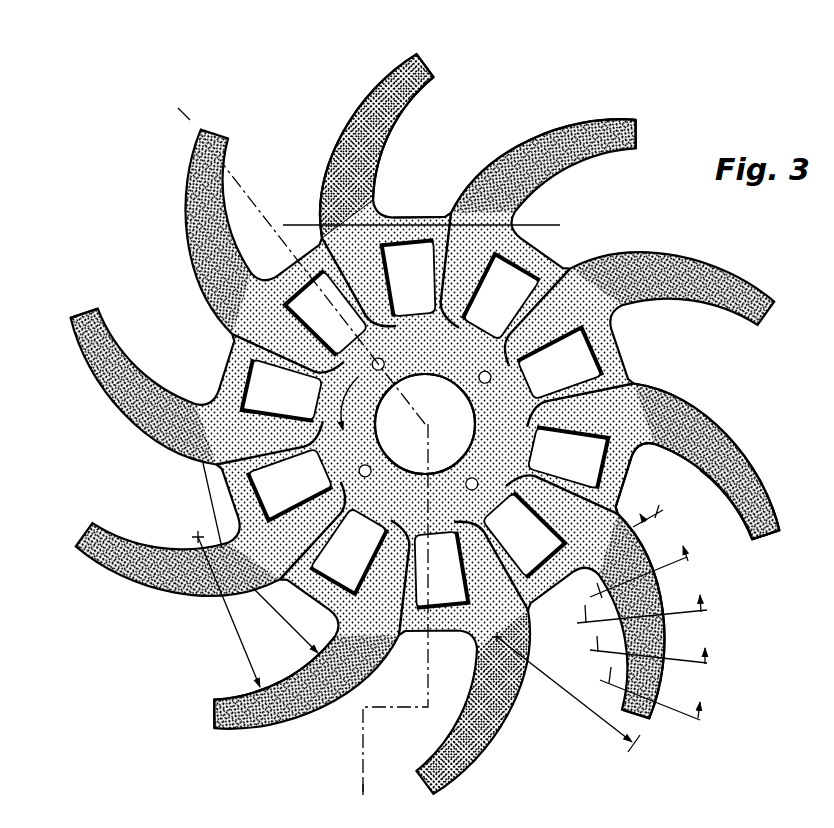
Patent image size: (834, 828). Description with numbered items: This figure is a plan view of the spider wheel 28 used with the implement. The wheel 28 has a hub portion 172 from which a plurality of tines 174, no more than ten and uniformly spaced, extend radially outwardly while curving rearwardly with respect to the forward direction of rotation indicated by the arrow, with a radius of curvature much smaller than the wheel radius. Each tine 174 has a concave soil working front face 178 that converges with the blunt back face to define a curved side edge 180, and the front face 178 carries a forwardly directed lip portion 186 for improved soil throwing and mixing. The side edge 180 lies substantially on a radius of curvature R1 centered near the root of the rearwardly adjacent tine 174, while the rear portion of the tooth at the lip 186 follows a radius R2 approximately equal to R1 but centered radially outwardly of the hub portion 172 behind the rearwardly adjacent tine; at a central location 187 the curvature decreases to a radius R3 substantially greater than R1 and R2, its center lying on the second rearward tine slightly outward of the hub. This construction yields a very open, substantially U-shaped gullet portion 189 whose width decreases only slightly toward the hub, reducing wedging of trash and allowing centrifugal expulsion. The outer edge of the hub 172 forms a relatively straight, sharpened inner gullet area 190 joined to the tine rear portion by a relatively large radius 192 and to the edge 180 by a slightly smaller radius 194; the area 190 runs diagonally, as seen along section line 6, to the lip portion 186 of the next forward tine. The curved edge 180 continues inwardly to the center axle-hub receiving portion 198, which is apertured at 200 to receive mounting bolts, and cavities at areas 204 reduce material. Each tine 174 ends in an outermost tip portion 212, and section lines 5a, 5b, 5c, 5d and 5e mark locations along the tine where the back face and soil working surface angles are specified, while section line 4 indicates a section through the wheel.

The wheel 28 is at (395, 63).
The tine 174 is at (432, 76).
The soil working front face 178 is at (332, 137).
The lip portion 186 is at (391, 135).
The hub portion 172 is at (425, 214).
The curved side edge 180 is at (527, 128).
The section line 6- 6 is at (293, 234).
The section line 4- 4 is at (209, 96).
The center axle-hub receiving portion 198 is at (434, 358).
The apertures 200 is at (485, 371).
The cavities 204 is at (478, 400).
The relatively large radius 192 is at (667, 447).
The inner gullet area 190 is at (652, 480).
The slightly smaller radius 194 is at (630, 513).
The section 5a is at (611, 516).
The section 5b is at (659, 563).
The section 5c is at (646, 616).
The section 5d is at (652, 656).
The section 5e is at (651, 699).
The outermost tip portion 212 is at (780, 535).
The gullet portion 189 is at (727, 543).
The central location 187 is at (282, 715).
The radius of curvature R1 is at (600, 725).
The radius of curvature R2 is at (300, 636).
The radius of curvature R3 is at (238, 620).